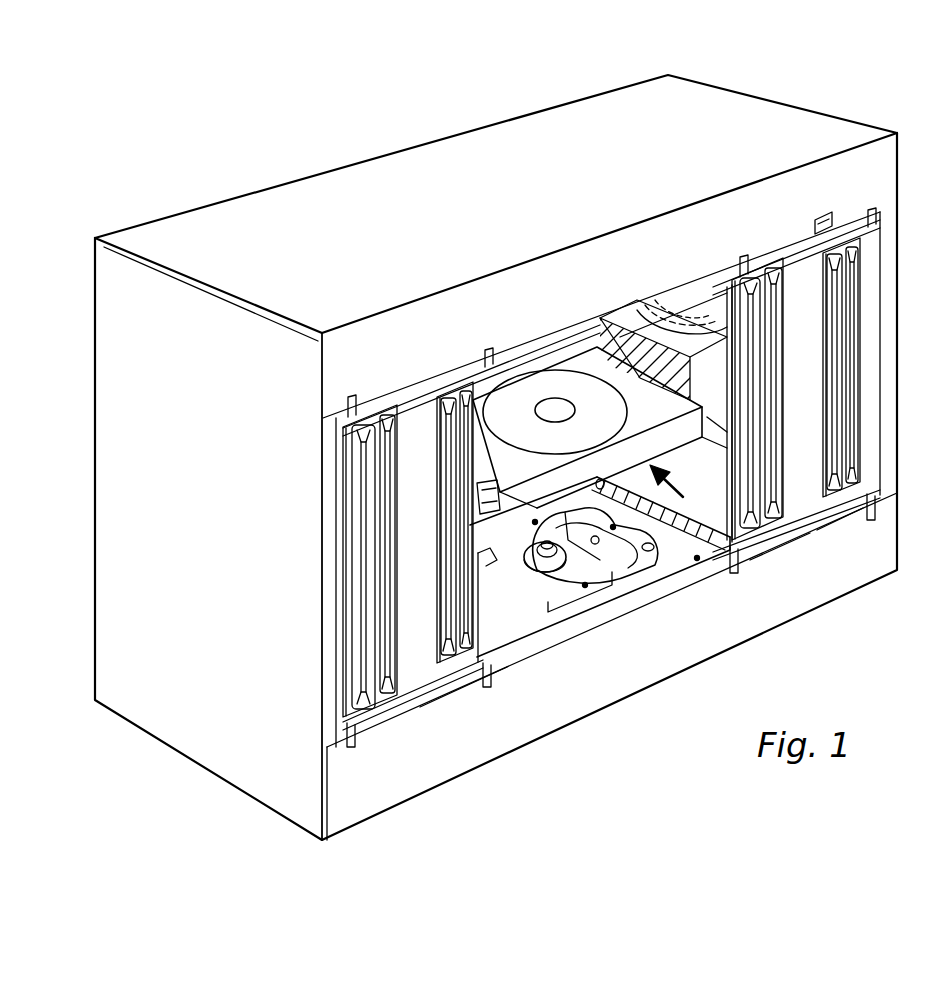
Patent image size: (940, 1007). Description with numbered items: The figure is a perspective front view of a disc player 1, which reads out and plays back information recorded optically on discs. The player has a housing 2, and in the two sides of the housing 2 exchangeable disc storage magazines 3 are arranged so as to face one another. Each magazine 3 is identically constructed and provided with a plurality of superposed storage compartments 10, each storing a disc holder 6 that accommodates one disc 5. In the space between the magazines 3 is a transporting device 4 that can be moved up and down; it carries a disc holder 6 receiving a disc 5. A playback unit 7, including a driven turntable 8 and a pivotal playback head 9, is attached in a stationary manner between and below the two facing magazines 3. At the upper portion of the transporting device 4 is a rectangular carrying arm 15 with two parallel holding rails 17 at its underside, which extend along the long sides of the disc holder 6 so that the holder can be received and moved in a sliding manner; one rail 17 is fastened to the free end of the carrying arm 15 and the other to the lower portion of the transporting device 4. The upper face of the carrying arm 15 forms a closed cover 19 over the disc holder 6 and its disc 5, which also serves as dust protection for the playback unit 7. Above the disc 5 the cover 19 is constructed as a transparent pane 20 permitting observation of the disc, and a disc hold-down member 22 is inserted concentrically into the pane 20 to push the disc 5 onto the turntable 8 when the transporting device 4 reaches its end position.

The disc player 1 is at (339, 112).
The housing 2 is at (812, 110).
The disc storage magazine 3 is at (403, 430).
The transporting device 4 is at (675, 489).
The disc 5 is at (672, 310).
The disc holder 6 is at (636, 310).
The playback unit 7 is at (512, 627).
The turntable 8 is at (545, 572).
The playback head 9 is at (597, 580).
The storage compartment 10 is at (727, 399).
The carrying arm 15 is at (677, 437).
The holding rail 17 is at (487, 512).
The cover 19 is at (636, 418).
The transparent pane 20 is at (582, 383).
The disc hold-down member 22 is at (550, 410).